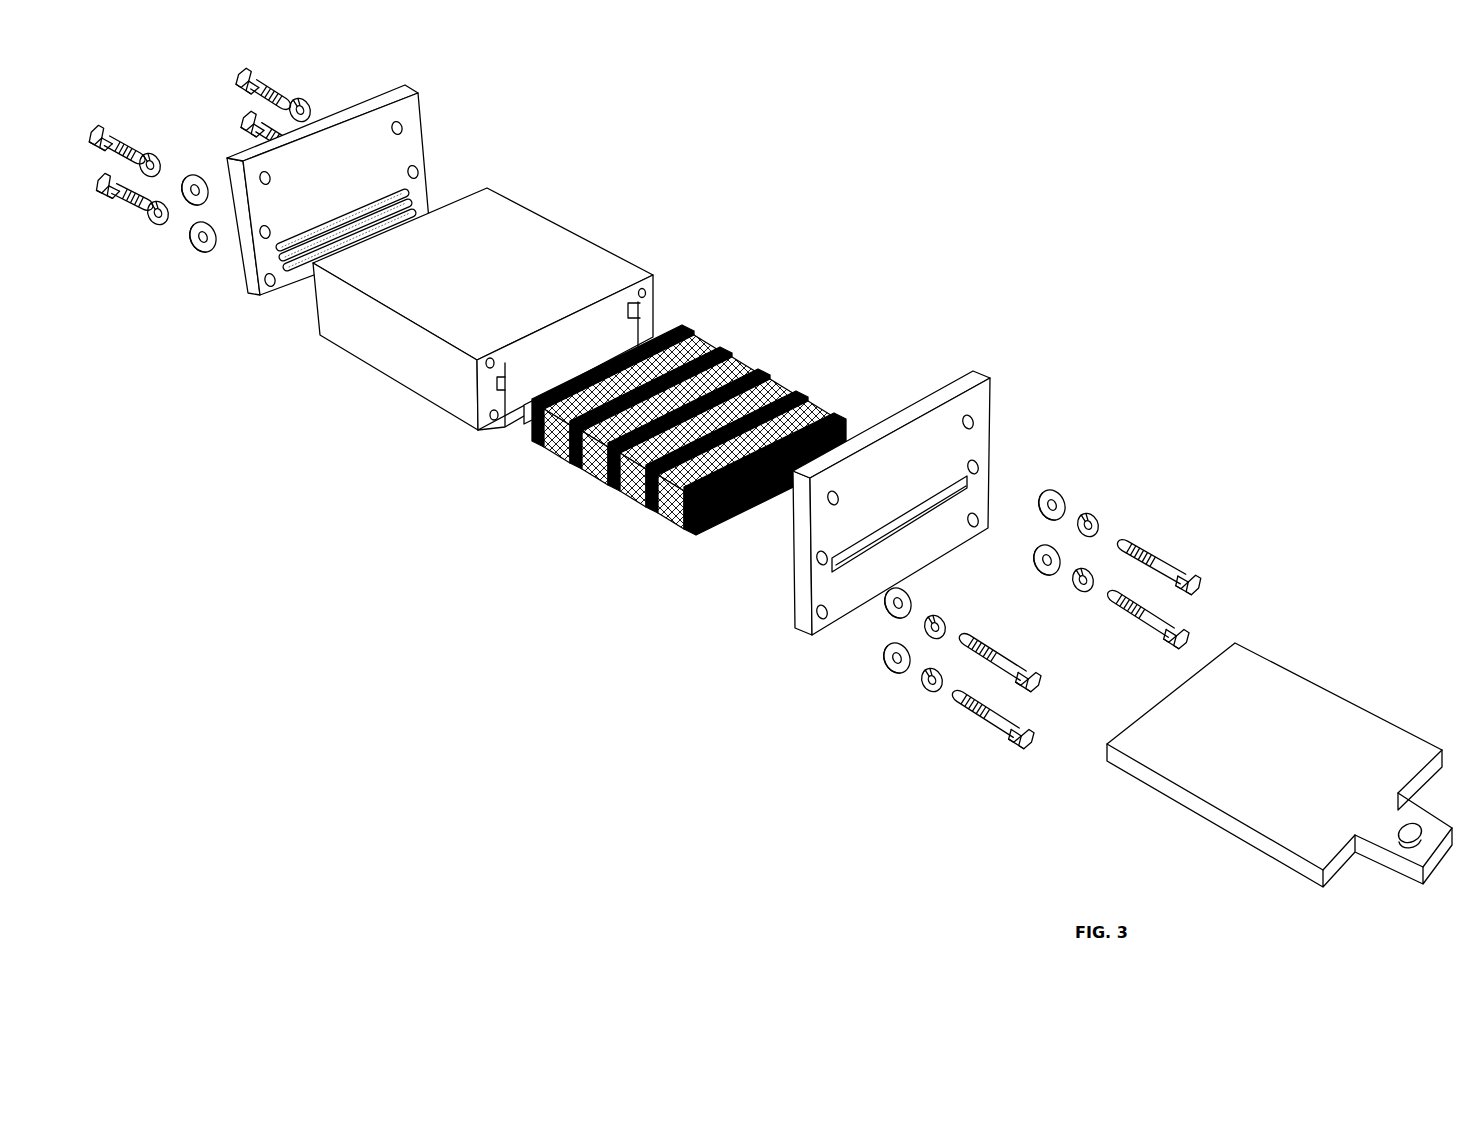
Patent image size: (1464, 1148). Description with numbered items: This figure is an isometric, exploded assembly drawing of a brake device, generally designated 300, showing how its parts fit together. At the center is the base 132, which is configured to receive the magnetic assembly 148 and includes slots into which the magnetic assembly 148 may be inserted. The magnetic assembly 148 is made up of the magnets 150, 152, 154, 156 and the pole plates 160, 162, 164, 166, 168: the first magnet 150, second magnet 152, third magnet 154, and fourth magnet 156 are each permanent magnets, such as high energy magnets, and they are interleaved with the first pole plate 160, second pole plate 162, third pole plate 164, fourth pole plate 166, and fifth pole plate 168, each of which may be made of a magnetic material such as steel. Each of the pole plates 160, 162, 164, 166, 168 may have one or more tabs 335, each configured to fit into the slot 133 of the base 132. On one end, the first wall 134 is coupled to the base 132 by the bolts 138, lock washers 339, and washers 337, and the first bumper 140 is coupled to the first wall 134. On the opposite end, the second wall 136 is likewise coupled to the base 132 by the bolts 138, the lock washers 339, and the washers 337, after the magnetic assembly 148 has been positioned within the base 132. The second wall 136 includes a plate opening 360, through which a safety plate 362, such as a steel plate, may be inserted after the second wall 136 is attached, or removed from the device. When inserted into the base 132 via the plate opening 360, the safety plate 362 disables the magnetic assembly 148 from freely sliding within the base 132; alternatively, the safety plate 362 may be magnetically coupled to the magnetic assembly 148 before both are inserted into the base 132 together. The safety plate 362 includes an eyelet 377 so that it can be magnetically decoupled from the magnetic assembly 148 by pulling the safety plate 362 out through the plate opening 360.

The assembly drawing 300 is at (1330, 104).
The base 132 is at (538, 213).
The slot 133 is at (514, 368).
The first wall 134 is at (254, 297).
The second wall 136 is at (993, 418).
The bolts 138 is at (95, 128).
The first bumper 140 is at (300, 263).
The magnetic assembly 148 is at (733, 464).
The first magnet 150 is at (556, 452).
The second magnet 152 is at (594, 474).
The third magnet 154 is at (632, 496).
The fourth magnet 156 is at (670, 518).
The first pole plate 160 is at (682, 325).
The second pole plate 162 is at (720, 347).
The third pole plate 164 is at (758, 369).
The fourth pole plate 166 is at (796, 391).
The fifth pole plate 168 is at (834, 413).
The tabs 335 is at (523, 422).
The washers 337 is at (204, 253).
The lock washers 339 is at (151, 154).
The plate opening 360 is at (853, 565).
The safety plate 362 is at (1236, 765).
The eyelet 377 is at (1401, 824).